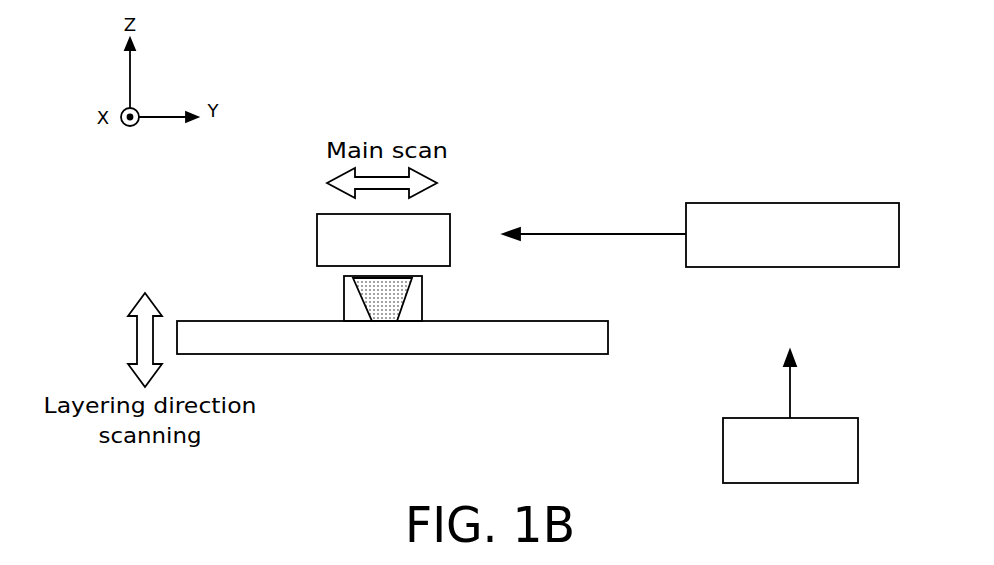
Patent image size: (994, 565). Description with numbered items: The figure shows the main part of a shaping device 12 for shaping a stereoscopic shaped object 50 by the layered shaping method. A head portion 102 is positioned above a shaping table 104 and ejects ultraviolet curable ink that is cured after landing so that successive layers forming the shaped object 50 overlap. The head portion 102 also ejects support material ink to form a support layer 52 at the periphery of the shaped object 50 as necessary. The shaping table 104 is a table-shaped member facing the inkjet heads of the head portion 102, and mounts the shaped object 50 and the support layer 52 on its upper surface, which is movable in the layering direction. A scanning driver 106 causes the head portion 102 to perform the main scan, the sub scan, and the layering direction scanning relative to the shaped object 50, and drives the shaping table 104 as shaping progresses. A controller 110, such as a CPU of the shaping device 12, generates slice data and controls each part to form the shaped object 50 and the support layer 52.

The shaping device 12 is at (801, 95).
The shaped object 50 is at (392, 312).
The support layer 52 is at (422, 303).
The head portion 102 is at (317, 238).
The shaping table 104 is at (330, 340).
The scanning driver 106 is at (727, 212).
The controller 110 is at (723, 455).